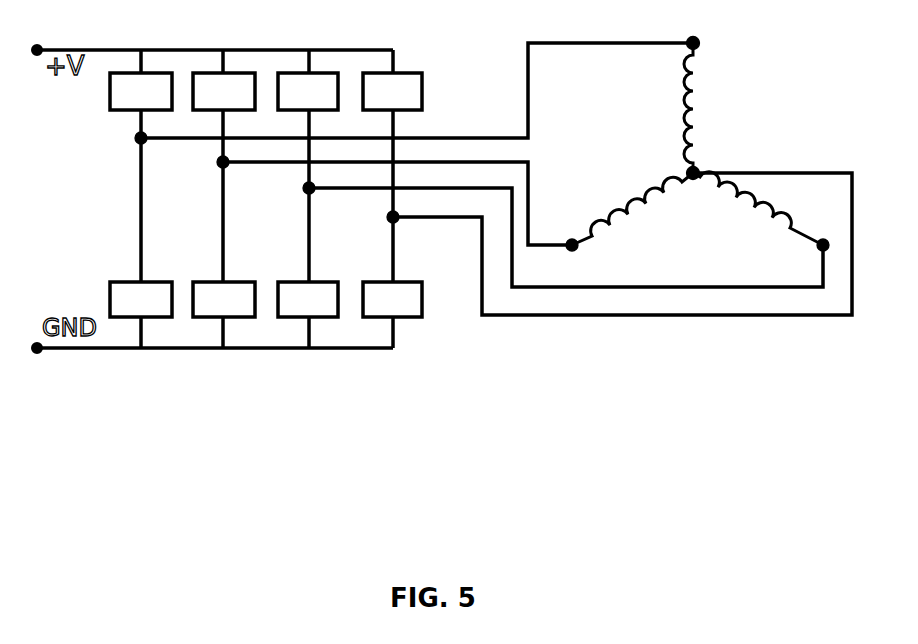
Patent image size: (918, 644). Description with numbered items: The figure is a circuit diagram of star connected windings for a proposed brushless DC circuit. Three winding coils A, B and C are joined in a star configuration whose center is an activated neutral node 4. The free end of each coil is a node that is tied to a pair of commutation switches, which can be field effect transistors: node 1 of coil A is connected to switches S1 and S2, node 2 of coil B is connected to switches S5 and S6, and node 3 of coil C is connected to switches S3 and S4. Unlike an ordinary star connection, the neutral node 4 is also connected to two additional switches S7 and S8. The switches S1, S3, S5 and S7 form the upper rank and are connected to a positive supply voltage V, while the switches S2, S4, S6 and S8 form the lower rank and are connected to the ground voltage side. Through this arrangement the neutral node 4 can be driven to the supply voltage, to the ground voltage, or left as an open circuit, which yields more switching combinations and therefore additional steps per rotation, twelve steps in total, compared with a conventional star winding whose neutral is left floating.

The node 1 is at (702, 47).
The node 2 is at (822, 228).
The node 3 is at (572, 226).
The neutral node 4 is at (704, 159).
The winding coil A is at (700, 108).
The winding coil B is at (758, 213).
The winding coil C is at (632, 209).
The switch S1 is at (141, 91).
The switch S2 is at (141, 299).
The switch S3 is at (224, 91).
The switch S4 is at (224, 299).
The switch S5 is at (308, 91).
The switch S6 is at (308, 299).
The switch S7 is at (392, 91).
The switch S8 is at (392, 299).